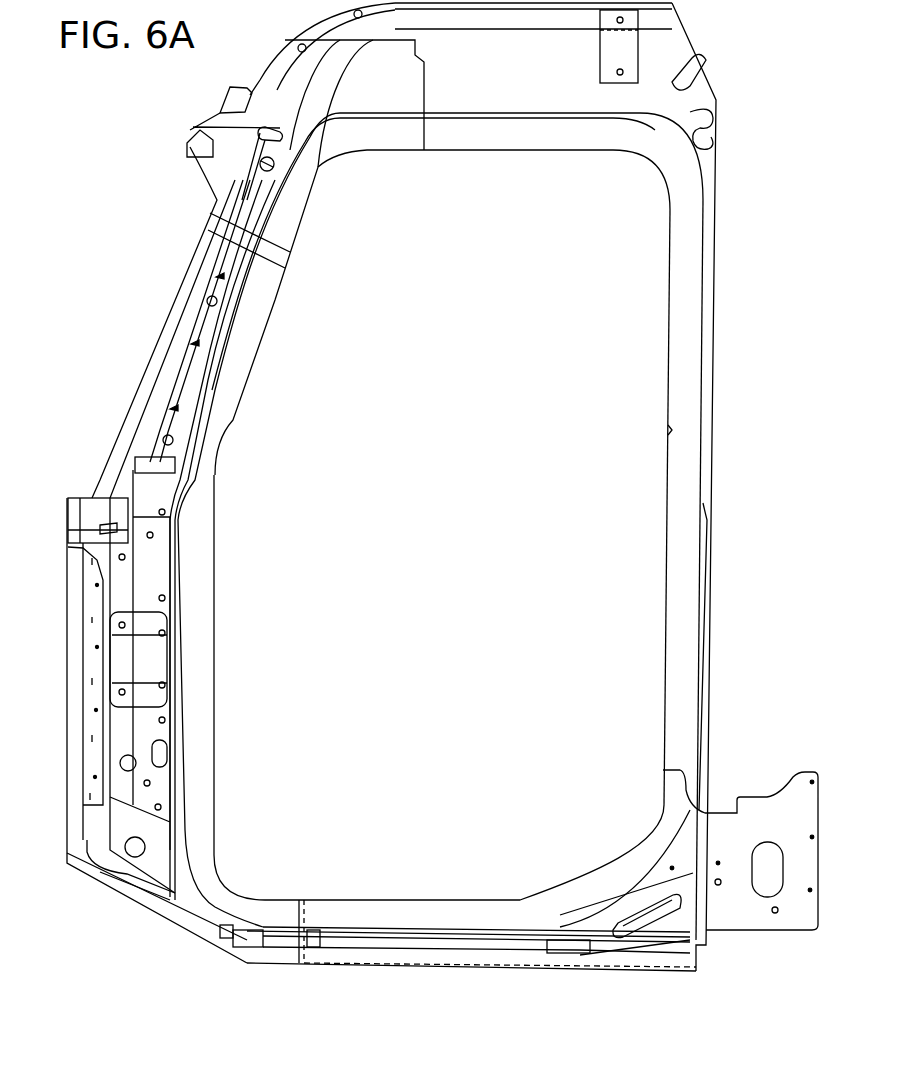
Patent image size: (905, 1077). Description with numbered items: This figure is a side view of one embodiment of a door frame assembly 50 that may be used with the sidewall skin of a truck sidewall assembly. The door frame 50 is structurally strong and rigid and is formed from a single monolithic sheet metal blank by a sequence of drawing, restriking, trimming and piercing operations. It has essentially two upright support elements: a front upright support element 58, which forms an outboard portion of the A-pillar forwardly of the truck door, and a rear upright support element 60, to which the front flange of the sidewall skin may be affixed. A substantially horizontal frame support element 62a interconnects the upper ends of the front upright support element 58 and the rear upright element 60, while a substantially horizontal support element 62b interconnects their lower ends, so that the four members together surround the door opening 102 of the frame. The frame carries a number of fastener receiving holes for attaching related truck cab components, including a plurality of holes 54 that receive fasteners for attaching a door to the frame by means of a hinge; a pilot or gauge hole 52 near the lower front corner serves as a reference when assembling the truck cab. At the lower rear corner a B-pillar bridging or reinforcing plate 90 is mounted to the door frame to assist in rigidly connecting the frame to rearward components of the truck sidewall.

The door frame assembly 50 is at (148, 319).
The pilot or gauge hole 52 is at (123, 847).
The holes for hinge fasteners 54 is at (98, 585).
The front upright support element 58 is at (163, 411).
The rear upright support element 60 is at (688, 492).
The upper horizontal frame support element 62a is at (480, 133).
The lower horizontal support element 62b is at (418, 900).
The B-pillar reinforcing plate 90 is at (767, 797).
The window opening 102 is at (623, 357).